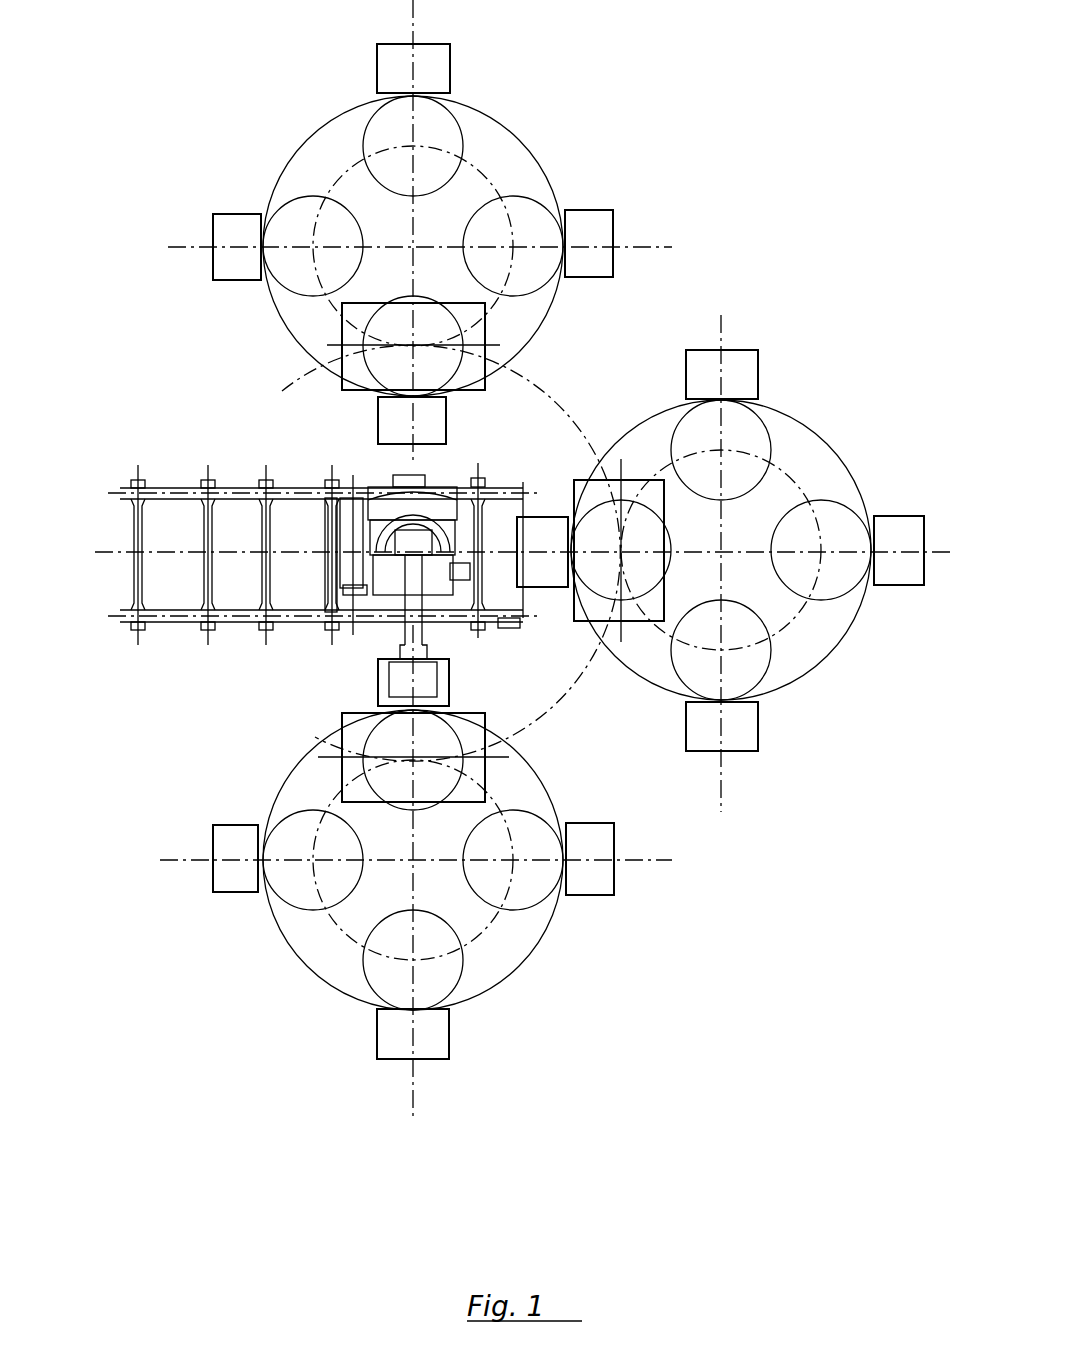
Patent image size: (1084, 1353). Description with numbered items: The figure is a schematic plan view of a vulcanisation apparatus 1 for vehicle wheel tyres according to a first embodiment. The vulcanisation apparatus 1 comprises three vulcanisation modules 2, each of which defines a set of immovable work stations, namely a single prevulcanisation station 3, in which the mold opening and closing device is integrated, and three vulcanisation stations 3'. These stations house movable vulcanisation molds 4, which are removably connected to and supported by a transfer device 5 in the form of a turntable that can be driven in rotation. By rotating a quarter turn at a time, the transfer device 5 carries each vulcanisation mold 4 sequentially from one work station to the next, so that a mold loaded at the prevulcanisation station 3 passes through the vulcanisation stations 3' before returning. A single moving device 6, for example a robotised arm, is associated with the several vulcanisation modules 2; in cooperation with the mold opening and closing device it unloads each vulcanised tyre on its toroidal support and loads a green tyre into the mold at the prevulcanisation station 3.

The vulcanisation apparatus 1 is at (745, 125).
The vulcanisation module 2 is at (255, 122).
The prevulcanisation station 3 is at (473, 353).
The vulcanisation station 3' is at (555, 573).
The vulcanisation mold 4 is at (528, 275).
The transfer device 5 is at (315, 335).
The moving device 6 is at (328, 655).